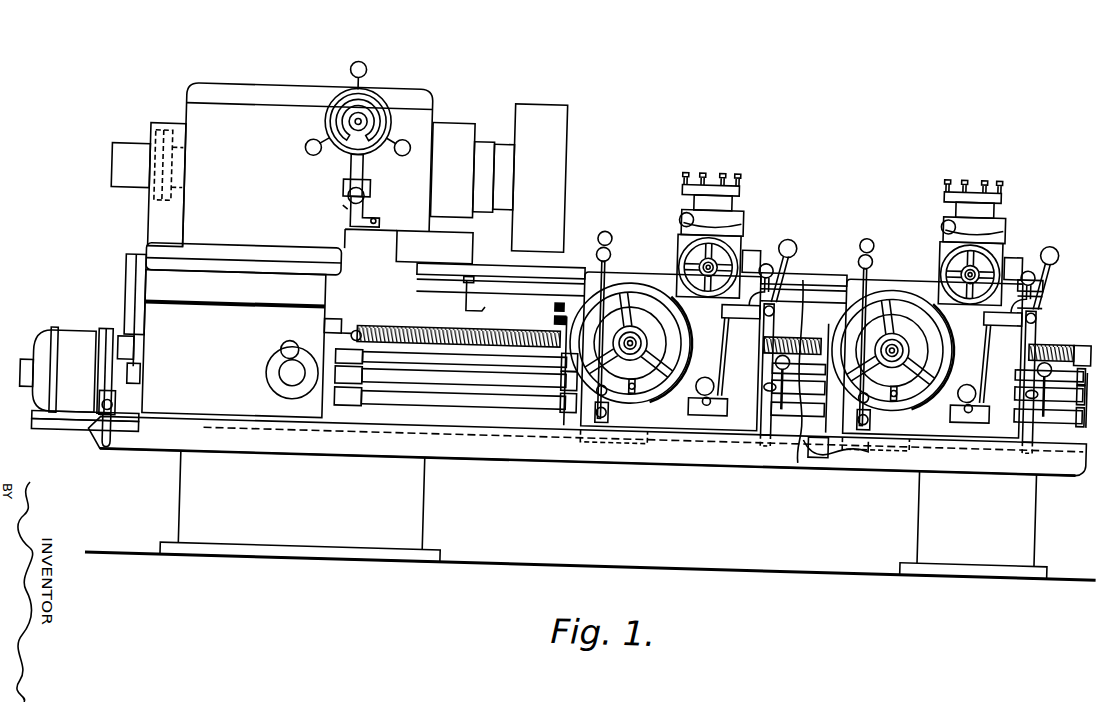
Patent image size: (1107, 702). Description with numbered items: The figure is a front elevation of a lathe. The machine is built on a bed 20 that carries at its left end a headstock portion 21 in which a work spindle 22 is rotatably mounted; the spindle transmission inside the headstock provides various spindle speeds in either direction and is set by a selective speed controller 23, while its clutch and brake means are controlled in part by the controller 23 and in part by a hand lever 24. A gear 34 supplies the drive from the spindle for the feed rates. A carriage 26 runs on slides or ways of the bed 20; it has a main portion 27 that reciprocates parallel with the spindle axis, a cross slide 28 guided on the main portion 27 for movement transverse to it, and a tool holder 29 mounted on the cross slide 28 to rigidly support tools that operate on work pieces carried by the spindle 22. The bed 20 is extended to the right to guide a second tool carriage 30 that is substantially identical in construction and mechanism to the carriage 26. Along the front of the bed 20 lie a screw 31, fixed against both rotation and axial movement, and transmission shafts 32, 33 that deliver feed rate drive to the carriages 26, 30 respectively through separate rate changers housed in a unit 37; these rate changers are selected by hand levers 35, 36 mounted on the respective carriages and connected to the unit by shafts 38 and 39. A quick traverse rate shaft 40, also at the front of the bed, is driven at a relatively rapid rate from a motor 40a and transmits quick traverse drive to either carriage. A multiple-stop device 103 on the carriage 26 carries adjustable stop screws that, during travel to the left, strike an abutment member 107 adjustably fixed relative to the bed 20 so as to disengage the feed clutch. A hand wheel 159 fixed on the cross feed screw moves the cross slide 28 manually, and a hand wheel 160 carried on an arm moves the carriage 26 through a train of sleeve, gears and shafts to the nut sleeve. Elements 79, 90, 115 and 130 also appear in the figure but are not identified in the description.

The bed 20 is at (543, 404).
The headstock portion 21 is at (187, 118).
The work spindle 22 is at (496, 133).
The selective speed controller 23 is at (360, 102).
The hand lever 24 is at (341, 163).
The carriage 26 is at (701, 339).
The main portion 27 is at (639, 257).
The cross slide 28 is at (669, 231).
The tool holder 29 is at (670, 178).
The second tool carriage 30 is at (916, 400).
The screw 31 is at (377, 322).
The transmission shaft 32 is at (425, 348).
The transmission shaft 33 is at (579, 403).
The gear 34 is at (147, 203).
The hand lever 35 is at (789, 398).
The hand lever 36 is at (1041, 371).
The unit 37 is at (254, 273).
The shaft 38 is at (847, 416).
The shaft 39 is at (820, 419).
The quick traverse rate shaft 40 is at (476, 396).
The motor 40a is at (64, 350).
The knob 79 is at (590, 243).
The knob 90 is at (594, 215).
The multiple-stop device 103 is at (545, 293).
The abutment member 107 is at (469, 289).
The hand lever 115 is at (788, 227).
The knob 130 is at (762, 243).
The hand wheel 159 is at (729, 249).
The hand wheel 160 is at (687, 308).